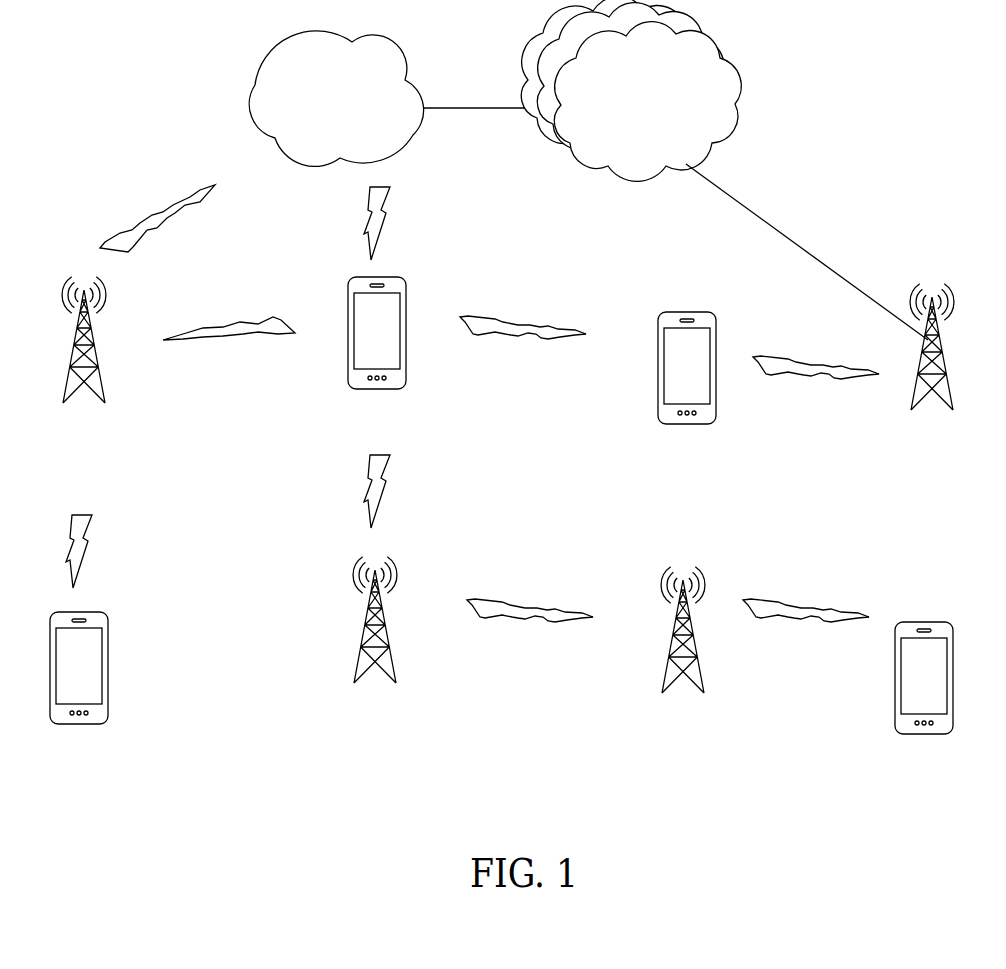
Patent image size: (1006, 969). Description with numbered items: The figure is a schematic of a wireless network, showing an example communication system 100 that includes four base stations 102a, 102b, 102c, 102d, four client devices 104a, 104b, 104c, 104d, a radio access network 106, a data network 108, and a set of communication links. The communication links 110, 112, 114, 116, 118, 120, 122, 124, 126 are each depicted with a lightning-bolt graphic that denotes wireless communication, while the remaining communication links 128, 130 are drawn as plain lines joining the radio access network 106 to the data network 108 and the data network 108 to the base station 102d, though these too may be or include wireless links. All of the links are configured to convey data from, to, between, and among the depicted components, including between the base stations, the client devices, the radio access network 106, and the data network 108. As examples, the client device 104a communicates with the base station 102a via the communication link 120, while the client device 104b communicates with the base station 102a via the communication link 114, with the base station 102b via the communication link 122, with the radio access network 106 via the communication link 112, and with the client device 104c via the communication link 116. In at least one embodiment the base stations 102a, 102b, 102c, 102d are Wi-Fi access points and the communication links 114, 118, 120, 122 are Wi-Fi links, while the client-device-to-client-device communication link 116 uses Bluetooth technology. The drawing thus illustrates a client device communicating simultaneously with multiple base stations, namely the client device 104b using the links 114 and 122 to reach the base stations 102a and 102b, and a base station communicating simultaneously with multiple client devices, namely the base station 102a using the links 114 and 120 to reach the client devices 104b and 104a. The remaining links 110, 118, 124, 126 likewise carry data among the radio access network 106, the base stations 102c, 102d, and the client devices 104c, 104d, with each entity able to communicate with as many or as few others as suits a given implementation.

The communication system 100 is at (902, 96).
The base station 102a is at (108, 443).
The base station 102b is at (400, 721).
The base station 102c is at (709, 733).
The base station 102d is at (956, 452).
The client device 104a is at (106, 760).
The client device 104b is at (405, 426).
The client device 104c is at (711, 460).
The client device 104d is at (953, 771).
The radio access network 106 is at (251, 110).
The data network 108 is at (735, 113).
The communication link 110 is at (172, 224).
The communication link 112 is at (388, 214).
The communication link 114 is at (258, 322).
The communication link 116 is at (516, 324).
The communication link 118 is at (806, 362).
The communication link 120 is at (90, 552).
The communication link 122 is at (386, 490).
The communication link 124 is at (520, 606).
The communication link 126 is at (800, 606).
The communication link 128 is at (476, 108).
The communication link 130 is at (806, 256).